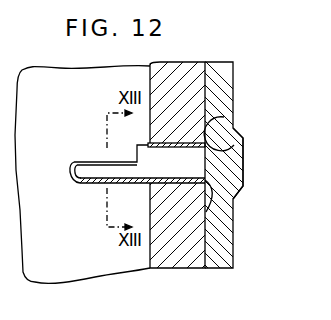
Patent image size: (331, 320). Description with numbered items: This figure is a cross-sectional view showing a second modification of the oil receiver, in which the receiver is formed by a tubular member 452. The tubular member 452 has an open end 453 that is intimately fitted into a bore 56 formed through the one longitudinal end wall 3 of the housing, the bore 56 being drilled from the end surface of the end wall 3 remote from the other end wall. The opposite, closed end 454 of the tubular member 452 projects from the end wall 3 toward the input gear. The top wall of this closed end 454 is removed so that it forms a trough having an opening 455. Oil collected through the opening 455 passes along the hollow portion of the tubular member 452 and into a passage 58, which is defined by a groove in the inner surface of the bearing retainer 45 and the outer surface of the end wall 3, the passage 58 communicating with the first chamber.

The one longitudinal end wall 3 is at (178, 256).
The bearing retainer 45 is at (233, 231).
The bore 56 is at (178, 148).
The passage 58 is at (221, 173).
The tubular member 452 is at (98, 186).
The open end 453 is at (243, 136).
The closed end 454 is at (73, 170).
The opening 455 is at (91, 158).